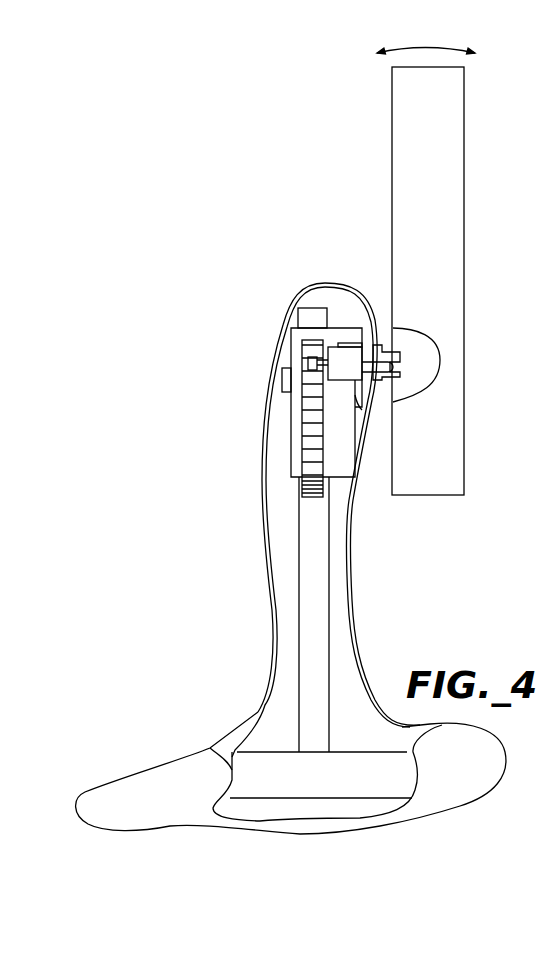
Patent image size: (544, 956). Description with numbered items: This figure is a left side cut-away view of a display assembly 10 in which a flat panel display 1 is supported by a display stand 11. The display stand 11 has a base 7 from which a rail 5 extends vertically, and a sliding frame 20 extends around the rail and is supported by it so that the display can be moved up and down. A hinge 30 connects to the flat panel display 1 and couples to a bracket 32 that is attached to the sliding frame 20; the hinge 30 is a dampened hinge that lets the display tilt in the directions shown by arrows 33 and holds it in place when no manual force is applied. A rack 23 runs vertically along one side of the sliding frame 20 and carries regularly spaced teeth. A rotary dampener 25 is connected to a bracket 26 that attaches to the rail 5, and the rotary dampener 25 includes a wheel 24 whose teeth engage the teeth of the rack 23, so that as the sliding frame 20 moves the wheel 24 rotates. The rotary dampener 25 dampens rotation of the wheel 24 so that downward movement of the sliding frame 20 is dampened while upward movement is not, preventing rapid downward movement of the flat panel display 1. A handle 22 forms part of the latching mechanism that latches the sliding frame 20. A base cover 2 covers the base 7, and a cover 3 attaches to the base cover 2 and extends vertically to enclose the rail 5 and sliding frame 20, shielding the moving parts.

The flat panel display 1 is at (450, 128).
The base cover 2 is at (118, 787).
The cover 3 is at (242, 730).
The rail 5 is at (318, 582).
The base 7 is at (378, 788).
The display assembly 10 is at (306, 482).
The display stand 11 is at (262, 583).
The sliding frame 20 is at (343, 462).
The handle 22 is at (360, 335).
The rack 23 is at (315, 457).
The wheel 24 is at (315, 358).
The rotary dampener 25 is at (348, 370).
The bracket 26 is at (360, 405).
The hinge 30 is at (398, 368).
The bracket 32 is at (393, 345).
The arrows 33 is at (422, 47).